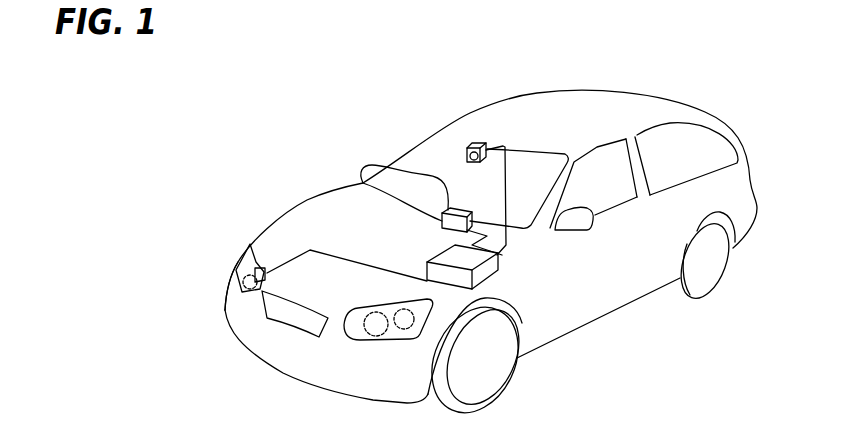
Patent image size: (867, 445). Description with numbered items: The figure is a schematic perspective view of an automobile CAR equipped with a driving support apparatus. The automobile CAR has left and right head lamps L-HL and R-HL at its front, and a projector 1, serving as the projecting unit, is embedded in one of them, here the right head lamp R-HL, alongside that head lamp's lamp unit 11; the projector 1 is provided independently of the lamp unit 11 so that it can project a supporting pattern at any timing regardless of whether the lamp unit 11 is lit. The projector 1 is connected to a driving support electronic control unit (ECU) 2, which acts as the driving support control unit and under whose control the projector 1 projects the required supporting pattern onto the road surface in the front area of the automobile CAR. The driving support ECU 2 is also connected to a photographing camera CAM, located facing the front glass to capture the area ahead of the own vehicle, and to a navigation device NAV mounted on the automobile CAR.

The projector 1 is at (225, 309).
The driving support electronic control unit (ECU) 2 is at (498, 258).
The lamp unit 11 is at (239, 263).
The automobile CAR is at (598, 88).
The photographing camera CAM is at (473, 141).
The navigation device NAV is at (387, 168).
The right head lamp R-HL is at (244, 260).
The left head lamp L-HL is at (394, 338).